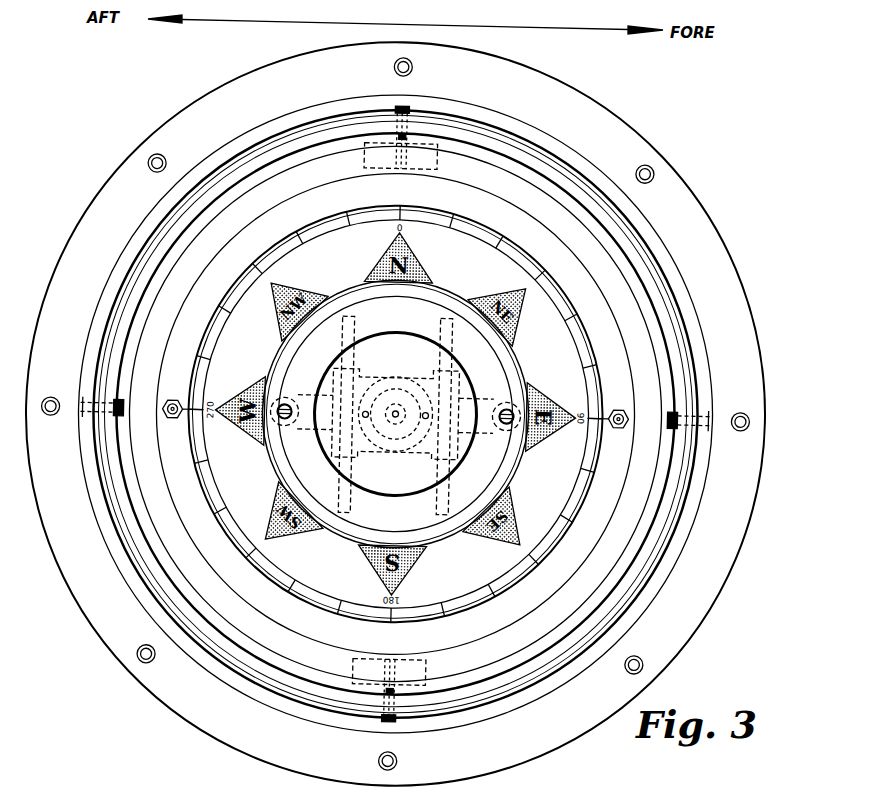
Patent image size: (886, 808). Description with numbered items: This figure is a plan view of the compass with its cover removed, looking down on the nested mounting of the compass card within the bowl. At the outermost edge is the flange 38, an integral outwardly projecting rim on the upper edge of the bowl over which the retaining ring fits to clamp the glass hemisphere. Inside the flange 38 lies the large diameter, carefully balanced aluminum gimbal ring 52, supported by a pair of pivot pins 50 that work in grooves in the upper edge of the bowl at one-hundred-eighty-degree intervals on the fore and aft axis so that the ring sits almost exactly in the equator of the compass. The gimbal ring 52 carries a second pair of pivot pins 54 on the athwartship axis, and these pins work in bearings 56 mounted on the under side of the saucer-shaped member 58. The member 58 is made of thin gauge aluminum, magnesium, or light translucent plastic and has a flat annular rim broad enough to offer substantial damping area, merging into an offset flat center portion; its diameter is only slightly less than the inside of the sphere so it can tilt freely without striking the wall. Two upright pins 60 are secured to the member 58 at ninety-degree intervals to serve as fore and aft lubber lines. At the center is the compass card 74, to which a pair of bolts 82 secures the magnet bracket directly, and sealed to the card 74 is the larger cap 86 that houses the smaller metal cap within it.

The flange 38 is at (91, 210).
The pivot pins 50 is at (121, 418).
The gimbal ring 52 is at (120, 331).
The pivot pins 54 is at (405, 113).
The bearings 56 is at (364, 165).
The saucer-shaped member 58 is at (481, 177).
The upright pins 60 is at (178, 392).
The compass card 74 is at (358, 319).
The bolts 82 is at (287, 407).
The cap 86 is at (396, 345).